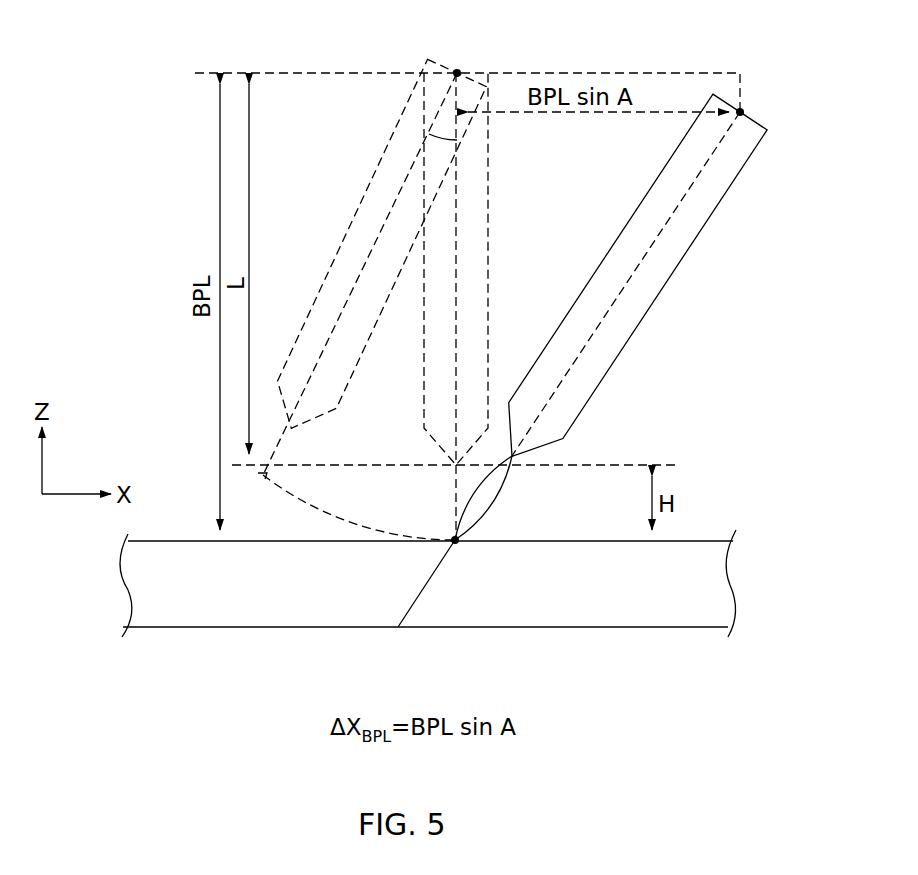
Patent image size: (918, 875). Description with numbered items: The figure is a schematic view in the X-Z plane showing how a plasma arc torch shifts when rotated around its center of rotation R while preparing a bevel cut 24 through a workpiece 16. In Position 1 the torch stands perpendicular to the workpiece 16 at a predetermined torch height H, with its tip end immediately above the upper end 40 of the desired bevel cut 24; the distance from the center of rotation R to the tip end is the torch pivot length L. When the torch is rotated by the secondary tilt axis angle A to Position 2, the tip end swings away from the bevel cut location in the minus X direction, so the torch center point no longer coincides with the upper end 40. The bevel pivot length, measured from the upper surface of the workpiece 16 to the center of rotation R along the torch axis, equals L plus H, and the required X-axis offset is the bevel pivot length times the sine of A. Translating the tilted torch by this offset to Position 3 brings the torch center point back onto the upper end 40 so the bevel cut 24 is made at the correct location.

The Position 1 is at (467, 292).
The Position 2 is at (372, 299).
The Position 3 is at (611, 313).
The workpiece 16 is at (713, 588).
The bevel cut 24 is at (433, 578).
The upper end of the bevel cut 40 is at (473, 538).